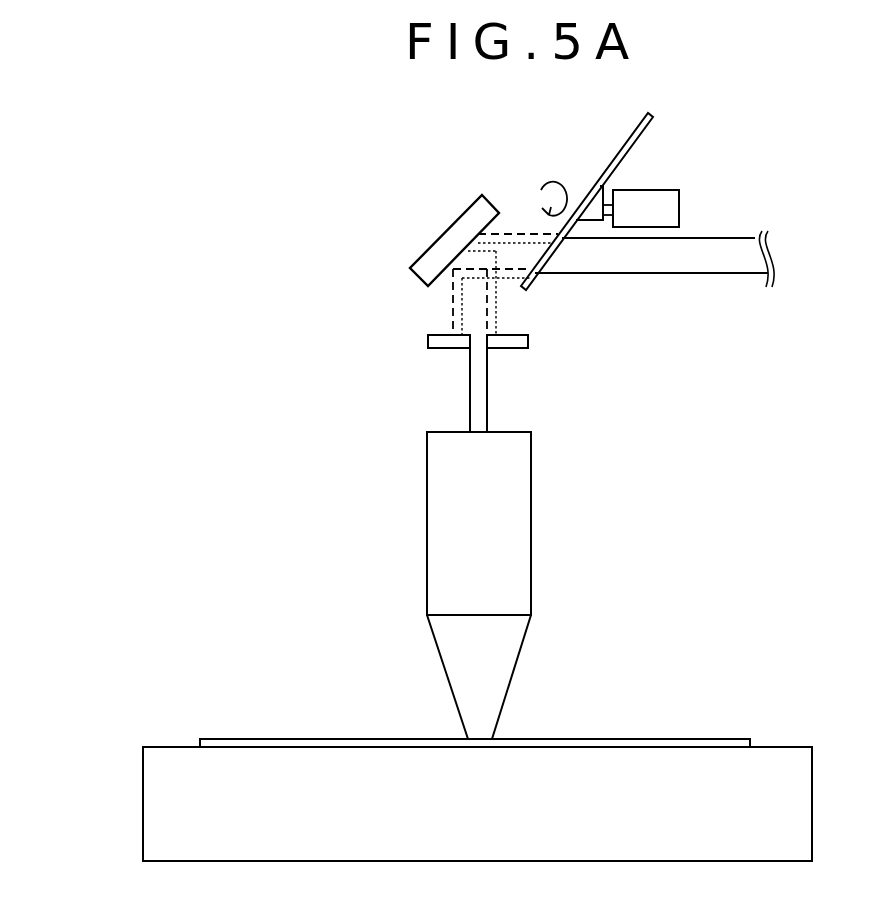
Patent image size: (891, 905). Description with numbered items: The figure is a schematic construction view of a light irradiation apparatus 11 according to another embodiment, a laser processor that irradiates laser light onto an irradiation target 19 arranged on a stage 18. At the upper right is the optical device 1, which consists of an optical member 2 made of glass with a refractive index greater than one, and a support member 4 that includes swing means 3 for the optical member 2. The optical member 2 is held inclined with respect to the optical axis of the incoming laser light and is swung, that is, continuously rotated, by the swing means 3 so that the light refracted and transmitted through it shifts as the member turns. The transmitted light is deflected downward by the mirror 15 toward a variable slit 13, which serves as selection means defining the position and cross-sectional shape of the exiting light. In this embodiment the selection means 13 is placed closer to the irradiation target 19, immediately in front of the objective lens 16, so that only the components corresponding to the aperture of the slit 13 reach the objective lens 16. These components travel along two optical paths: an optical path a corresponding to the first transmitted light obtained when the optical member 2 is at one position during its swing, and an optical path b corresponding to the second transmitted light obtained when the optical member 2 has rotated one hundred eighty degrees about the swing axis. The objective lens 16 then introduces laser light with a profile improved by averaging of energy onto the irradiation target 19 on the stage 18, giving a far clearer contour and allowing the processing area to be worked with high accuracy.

The optical device 1 is at (740, 85).
The optical member 2 is at (637, 113).
The swing means 3 is at (604, 180).
The support member 4 is at (672, 204).
The light irradiation apparatus 11 is at (336, 178).
The variable slit 13 is at (529, 345).
The mirror 15 is at (471, 217).
The objective lens 16 is at (518, 548).
The stage 18 is at (797, 822).
The irradiation target 19 is at (697, 738).
The optical path a is at (496, 310).
The optical path b is at (452, 310).